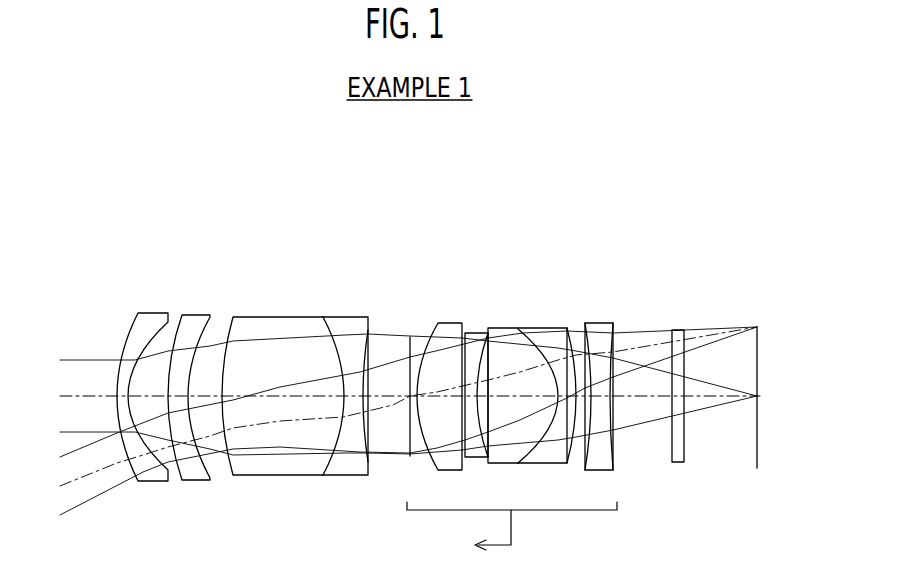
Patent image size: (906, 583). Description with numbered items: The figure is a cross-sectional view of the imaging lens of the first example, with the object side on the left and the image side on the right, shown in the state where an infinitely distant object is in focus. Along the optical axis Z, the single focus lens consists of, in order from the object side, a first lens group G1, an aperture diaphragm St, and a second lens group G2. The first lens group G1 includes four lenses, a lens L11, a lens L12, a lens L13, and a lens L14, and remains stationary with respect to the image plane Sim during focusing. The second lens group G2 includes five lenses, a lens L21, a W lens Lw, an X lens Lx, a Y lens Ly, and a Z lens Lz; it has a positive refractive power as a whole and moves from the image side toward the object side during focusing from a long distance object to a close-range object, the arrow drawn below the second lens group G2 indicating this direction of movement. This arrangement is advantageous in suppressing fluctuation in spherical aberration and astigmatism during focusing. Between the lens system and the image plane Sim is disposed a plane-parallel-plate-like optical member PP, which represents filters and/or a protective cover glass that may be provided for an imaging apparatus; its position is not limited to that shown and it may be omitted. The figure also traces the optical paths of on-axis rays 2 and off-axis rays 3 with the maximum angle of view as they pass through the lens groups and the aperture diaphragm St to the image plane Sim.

The first lens group G1 is at (375, 168).
The second lens group G2 is at (613, 168).
The lens L11 is at (152, 313).
The lens L12 is at (193, 315).
The lens L13 is at (267, 317).
The lens L14 is at (345, 317).
The lens L21 is at (450, 323).
The W lens Lw is at (478, 333).
The X lens Lx is at (510, 333).
The Y lens Ly is at (552, 328).
The Z lens Lz is at (597, 323).
The aperture diaphragm St is at (410, 337).
The optical member PP is at (675, 330).
The image plane Sim is at (758, 436).
The optical axis Z is at (73, 392).
The on-axis rays 2 is at (52, 353).
The off-axis rays 3 is at (52, 455).